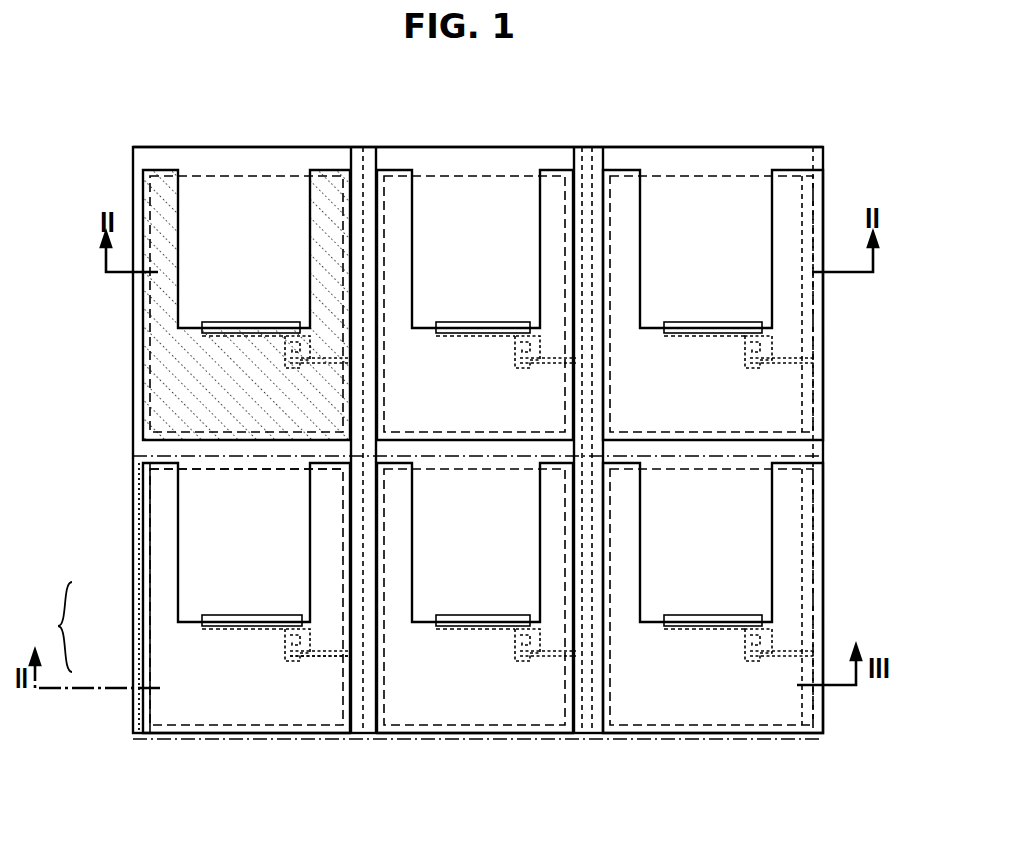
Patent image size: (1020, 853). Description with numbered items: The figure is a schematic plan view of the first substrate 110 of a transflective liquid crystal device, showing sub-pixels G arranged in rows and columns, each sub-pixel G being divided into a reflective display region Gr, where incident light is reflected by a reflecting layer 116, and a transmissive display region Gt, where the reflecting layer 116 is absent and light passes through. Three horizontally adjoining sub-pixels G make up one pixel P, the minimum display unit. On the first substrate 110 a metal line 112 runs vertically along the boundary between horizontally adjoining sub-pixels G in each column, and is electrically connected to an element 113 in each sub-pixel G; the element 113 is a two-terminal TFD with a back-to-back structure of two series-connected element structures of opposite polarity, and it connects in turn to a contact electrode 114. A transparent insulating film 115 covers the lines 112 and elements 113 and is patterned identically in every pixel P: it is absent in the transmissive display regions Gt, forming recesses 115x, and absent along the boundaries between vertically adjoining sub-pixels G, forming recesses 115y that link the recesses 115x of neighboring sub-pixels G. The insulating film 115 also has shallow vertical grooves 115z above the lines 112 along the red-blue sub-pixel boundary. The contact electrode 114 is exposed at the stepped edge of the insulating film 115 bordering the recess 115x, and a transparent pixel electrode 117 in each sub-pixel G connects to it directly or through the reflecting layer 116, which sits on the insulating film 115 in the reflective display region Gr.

The first substrate 110 is at (486, 112).
The line 112 is at (368, 705).
The element 113 is at (292, 661).
The contact electrode 114 is at (473, 321).
The insulating film 115 is at (826, 313).
The recess 115x is at (716, 226).
The recess 115y is at (334, 158).
The groove 115z is at (366, 162).
The reflecting layer 116 is at (143, 336).
The pixel electrode 117 is at (136, 571).
The sub-pixel G is at (55, 627).
The transmissive display region Gt is at (215, 578).
The reflective display region Gr is at (215, 648).
The pixel P is at (684, 734).